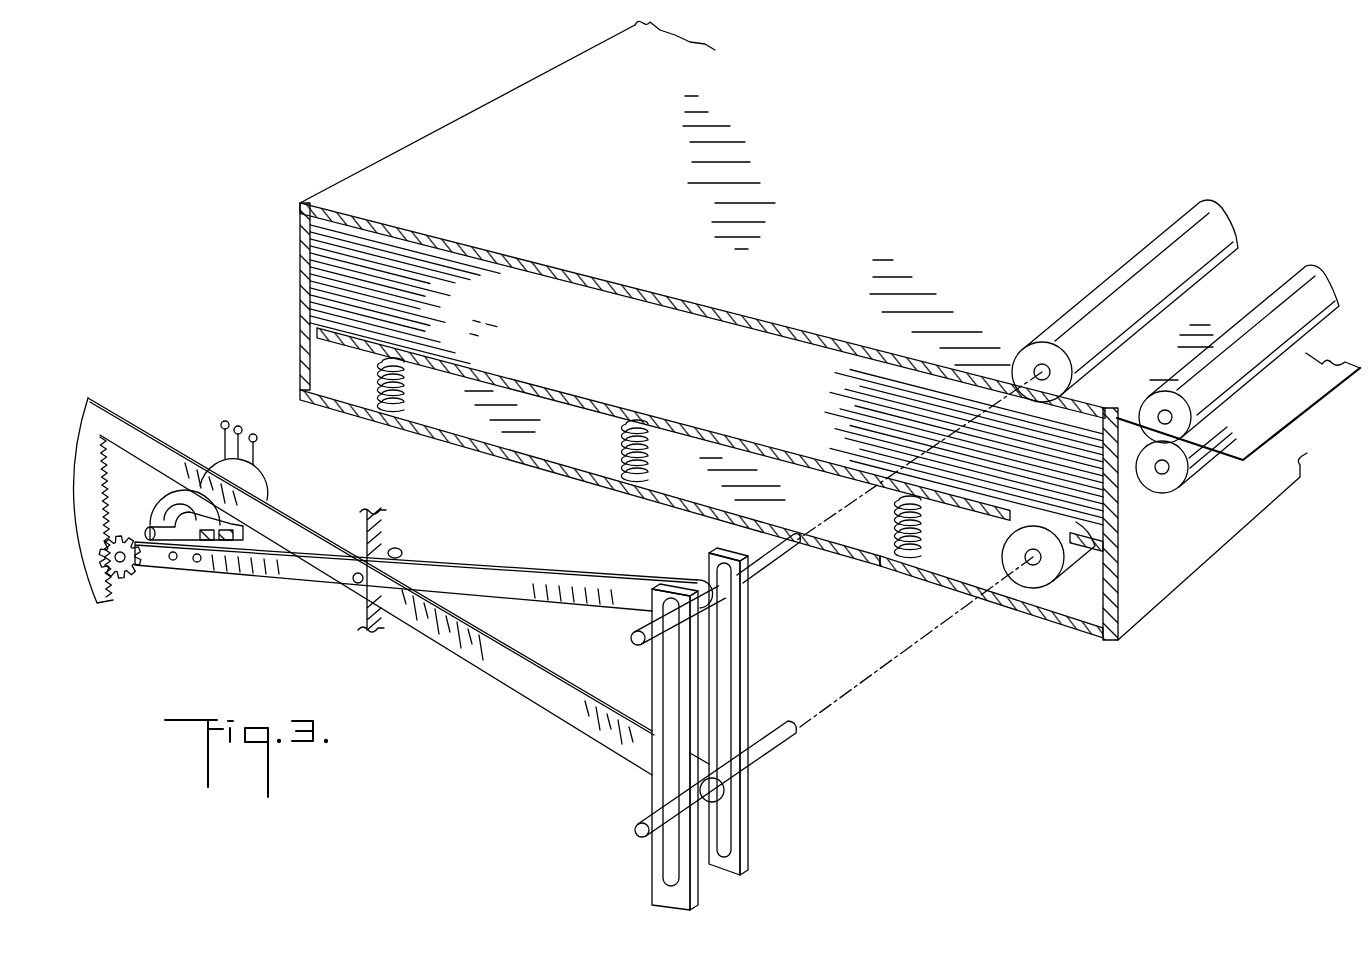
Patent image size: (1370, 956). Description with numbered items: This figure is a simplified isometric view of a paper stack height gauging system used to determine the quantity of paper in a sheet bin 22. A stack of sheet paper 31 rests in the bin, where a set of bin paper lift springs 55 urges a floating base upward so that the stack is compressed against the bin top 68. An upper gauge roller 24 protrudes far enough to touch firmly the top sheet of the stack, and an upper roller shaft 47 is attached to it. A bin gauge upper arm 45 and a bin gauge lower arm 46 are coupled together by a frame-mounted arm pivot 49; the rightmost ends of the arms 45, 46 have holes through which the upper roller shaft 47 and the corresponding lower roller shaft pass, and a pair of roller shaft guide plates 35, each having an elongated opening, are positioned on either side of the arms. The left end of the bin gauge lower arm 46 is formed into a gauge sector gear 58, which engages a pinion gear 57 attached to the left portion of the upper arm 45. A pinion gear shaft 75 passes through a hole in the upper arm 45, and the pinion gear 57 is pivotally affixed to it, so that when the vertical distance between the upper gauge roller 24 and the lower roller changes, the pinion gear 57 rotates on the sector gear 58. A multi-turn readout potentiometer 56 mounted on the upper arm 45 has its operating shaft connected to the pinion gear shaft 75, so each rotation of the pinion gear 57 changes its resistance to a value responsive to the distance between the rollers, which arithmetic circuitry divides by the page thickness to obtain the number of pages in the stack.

The sheet bin 22 is at (282, 400).
The upper gauge roller 24 is at (1028, 341).
The stack of sheet paper 31 is at (558, 292).
The roller shaft guide plates 35 is at (658, 883).
The bin gauge upper arm 45 is at (568, 580).
The bin gauge lower arm 46 is at (535, 690).
The upper roller shaft 47 is at (770, 566).
The arm pivot 49 is at (405, 550).
The bin paper lift springs 55 is at (642, 483).
The multi-turn readout potentiometer 56 is at (262, 481).
The pinion gear 57 is at (128, 574).
The gauge sector gear 58 is at (97, 586).
The bin top 68 is at (660, 302).
The pinion gear shaft 75 is at (150, 527).